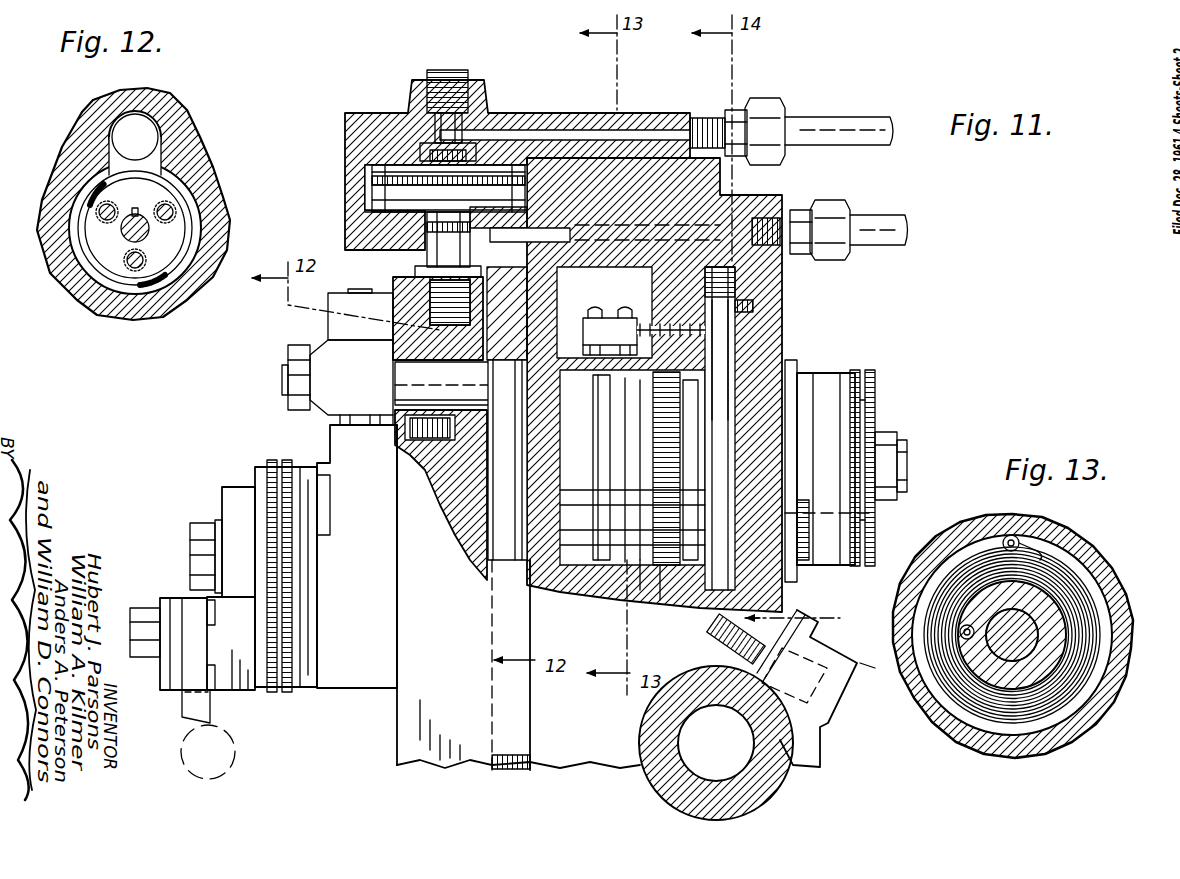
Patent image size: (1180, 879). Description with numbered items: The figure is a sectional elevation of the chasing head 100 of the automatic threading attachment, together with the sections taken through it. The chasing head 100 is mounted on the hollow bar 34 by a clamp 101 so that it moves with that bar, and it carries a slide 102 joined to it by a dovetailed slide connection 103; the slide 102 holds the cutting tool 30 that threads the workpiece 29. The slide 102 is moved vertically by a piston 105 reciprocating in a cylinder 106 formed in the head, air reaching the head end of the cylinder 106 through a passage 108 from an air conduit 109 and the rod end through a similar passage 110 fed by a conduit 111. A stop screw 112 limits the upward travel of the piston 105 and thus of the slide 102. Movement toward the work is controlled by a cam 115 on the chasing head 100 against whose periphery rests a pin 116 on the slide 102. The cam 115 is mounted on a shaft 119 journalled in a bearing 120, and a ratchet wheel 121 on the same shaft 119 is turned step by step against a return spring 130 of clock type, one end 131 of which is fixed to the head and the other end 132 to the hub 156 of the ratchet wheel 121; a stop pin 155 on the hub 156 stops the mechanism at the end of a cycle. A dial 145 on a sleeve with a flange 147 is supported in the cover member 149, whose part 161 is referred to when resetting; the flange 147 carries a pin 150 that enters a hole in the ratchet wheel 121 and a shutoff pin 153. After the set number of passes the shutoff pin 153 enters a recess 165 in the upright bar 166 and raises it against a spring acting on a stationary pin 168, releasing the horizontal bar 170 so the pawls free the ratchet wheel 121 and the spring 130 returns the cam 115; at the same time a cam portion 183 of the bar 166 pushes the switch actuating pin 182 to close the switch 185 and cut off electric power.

In FIG. 11, the chasing head 100 is at (587, 98).
In FIG. 13, the chasing head 100 is at (1108, 550).
In FIG. 11, the passage 108 is at (655, 132).
In FIG. 11, the stop screw 112 is at (455, 70).
In FIG. 11, the piston 105 is at (378, 200).
In FIG. 11, the cylinder 106 is at (368, 228).
In FIG. 11, the passage 110 is at (522, 242).
In FIG. 11, the pin 116 is at (497, 378).
In FIG. 12, the pin 116 is at (150, 135).
In FIG. 11, the cam 115 is at (500, 485).
In FIG. 12, the cam 115 is at (85, 200).
In FIG. 11, the slide 102 is at (397, 718).
In FIG. 11, the dovetailed slide connection 103 is at (496, 768).
In FIG. 11, the cutting tool 30 is at (182, 712).
In FIG. 11, the workpiece 29 is at (235, 760).
In FIG. 11, the end of return spring 131 is at (598, 385).
In FIG. 13, the end of return spring 131 is at (1010, 535).
In FIG. 11, the return spring 130 is at (640, 470).
In FIG. 13, the return spring 130 is at (1045, 690).
In FIG. 11, the stop pin 155 is at (660, 495).
In FIG. 11, the hub 156 is at (640, 592).
In FIG. 11, the bearing 120 is at (545, 590).
In FIG. 11, the ratchet wheel 121 is at (660, 600).
In FIG. 13, the ratchet wheel 121 is at (1020, 685).
In FIG. 11, the switch 185 is at (610, 318).
In FIG. 11, the switch actuating pin 182 is at (660, 330).
In FIG. 11, the cam portion 183 is at (735, 330).
In FIG. 11, the stationary pin 168 is at (752, 305).
In FIG. 11, the horizontal bar 170 is at (812, 375).
In FIG. 11, the dial 145 is at (828, 410).
In FIG. 11, the cover member 149 is at (870, 535).
In FIG. 11, the shutoff pin 153 is at (885, 428).
In FIG. 11, the flange 147 is at (897, 448).
In FIG. 11, the shaft 119 is at (907, 466).
In FIG. 12, the shaft 119 is at (150, 230).
In FIG. 13, the shaft 119 is at (990, 690).
In FIG. 11, the pin 150 is at (878, 513).
In FIG. 11, the part of cover member 161 is at (810, 572).
In FIG. 11, the air conduit 109 is at (865, 120).
In FIG. 11, the conduit 111 is at (880, 222).
In FIG. 11, the upright bar 166 is at (712, 640).
In FIG. 11, the recess 165 is at (760, 612).
In FIG. 11, the clamp 101 is at (828, 722).
In FIG. 11, the bar 34 is at (780, 790).
In FIG. 11, the end of return spring 132 is at (845, 688).
In FIG. 13, the end of return spring 132 is at (960, 636).